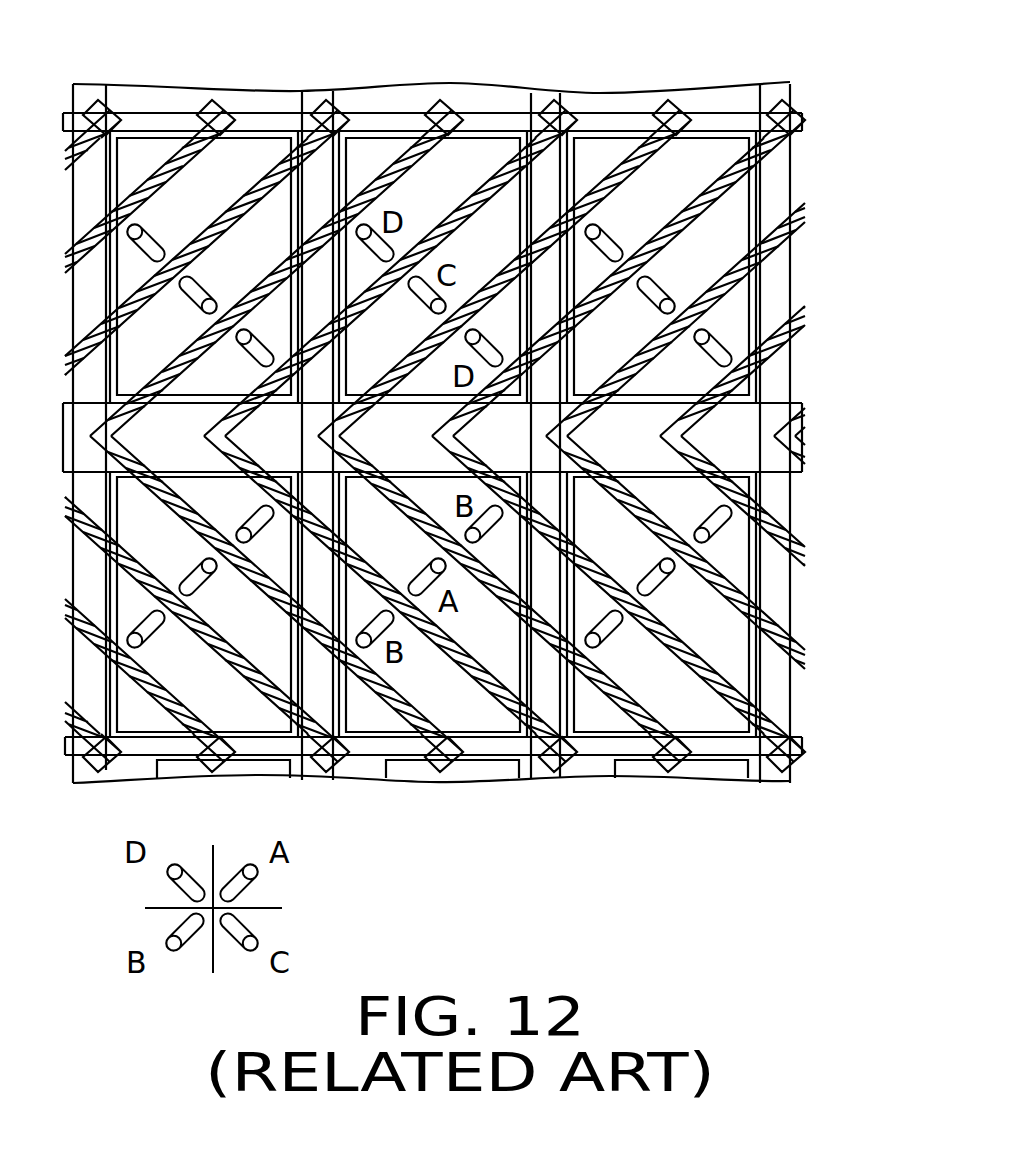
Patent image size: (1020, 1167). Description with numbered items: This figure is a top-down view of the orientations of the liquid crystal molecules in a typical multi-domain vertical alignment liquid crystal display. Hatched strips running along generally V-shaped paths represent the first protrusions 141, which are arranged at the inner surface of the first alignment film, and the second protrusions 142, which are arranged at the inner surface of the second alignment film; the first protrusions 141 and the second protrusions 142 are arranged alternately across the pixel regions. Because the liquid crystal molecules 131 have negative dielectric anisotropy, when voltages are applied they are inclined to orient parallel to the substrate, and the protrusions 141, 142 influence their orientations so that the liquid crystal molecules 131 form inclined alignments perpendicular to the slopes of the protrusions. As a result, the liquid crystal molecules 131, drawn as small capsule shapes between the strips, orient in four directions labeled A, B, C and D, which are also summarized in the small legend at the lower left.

The liquid crystal molecules 131 is at (745, 388).
The first protrusions 141 is at (550, 120).
The second protrusions 142 is at (667, 122).